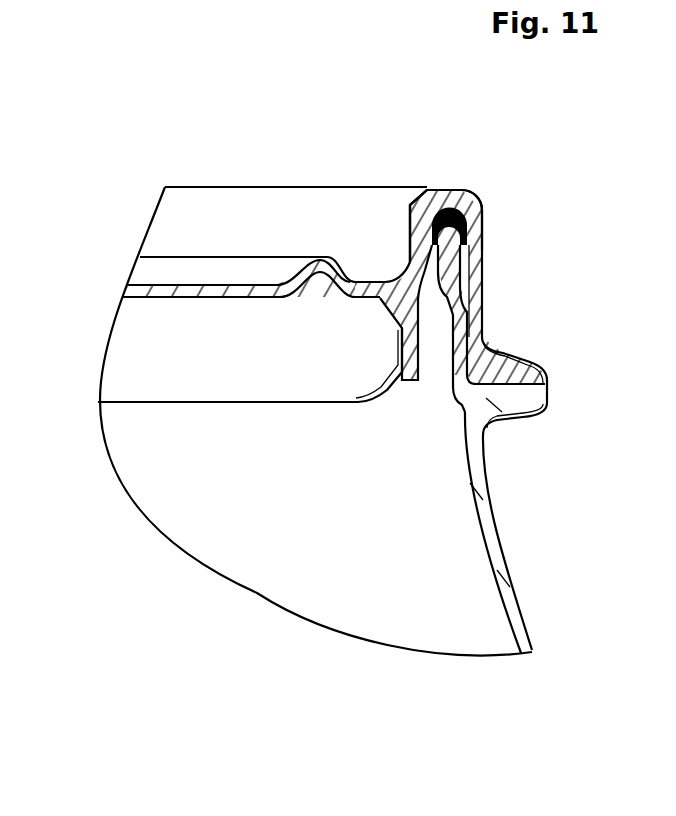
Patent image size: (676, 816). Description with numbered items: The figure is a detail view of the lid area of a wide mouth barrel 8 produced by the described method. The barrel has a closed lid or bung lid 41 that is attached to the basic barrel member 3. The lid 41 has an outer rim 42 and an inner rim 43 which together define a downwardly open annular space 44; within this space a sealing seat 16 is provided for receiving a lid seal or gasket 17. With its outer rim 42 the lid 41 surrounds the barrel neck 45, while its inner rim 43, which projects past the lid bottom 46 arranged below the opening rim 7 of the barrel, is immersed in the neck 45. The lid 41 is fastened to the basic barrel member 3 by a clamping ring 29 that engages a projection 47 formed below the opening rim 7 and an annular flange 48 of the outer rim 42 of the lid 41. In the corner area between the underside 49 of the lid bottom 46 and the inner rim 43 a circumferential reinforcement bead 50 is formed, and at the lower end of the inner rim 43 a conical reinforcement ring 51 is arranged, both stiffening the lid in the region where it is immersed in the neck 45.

The basic barrel member 3 is at (513, 607).
The opening rim 7 is at (428, 192).
The wide mouth barrel 8 is at (515, 505).
The sealing seat 16 is at (470, 210).
The lid seal 17 is at (413, 233).
The clamping ring 29 is at (547, 386).
The bung lid 41 is at (370, 208).
The outer rim 42 is at (473, 240).
The inner rim 43 is at (420, 223).
The annular space 44 is at (460, 292).
The barrel neck 45 is at (453, 257).
The lid bottom 46 is at (363, 298).
The projection 47 is at (515, 398).
The annular flange 48 is at (512, 370).
The underside 49 is at (362, 298).
The reinforcement bead 50 is at (425, 270).
The reinforcement ring 51 is at (383, 395).